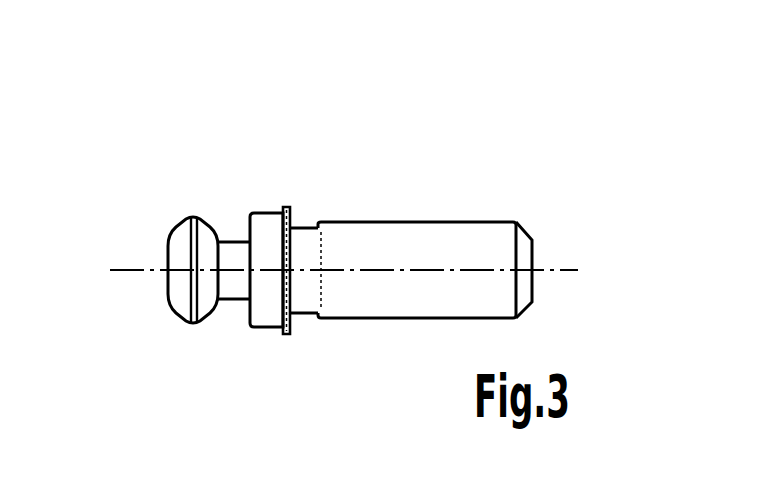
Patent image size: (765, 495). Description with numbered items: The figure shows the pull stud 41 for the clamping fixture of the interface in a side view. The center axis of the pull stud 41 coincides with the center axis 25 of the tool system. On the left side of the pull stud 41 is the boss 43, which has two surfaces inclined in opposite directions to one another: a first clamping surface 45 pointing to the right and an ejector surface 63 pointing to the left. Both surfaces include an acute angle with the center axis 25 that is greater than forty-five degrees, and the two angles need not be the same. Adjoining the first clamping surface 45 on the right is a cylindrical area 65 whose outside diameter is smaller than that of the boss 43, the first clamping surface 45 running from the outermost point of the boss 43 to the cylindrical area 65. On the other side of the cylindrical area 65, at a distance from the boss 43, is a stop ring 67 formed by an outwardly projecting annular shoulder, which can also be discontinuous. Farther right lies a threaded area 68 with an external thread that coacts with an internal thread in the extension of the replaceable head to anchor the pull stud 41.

The center axis 25 is at (548, 270).
The pull stud 41 is at (361, 166).
The boss 43 is at (195, 208).
The first clamping surface 45 is at (204, 318).
The ejector surface 63 is at (179, 226).
The cylindrical area 65 is at (233, 308).
The stop ring 67 is at (287, 206).
The threaded area 68 is at (455, 220).